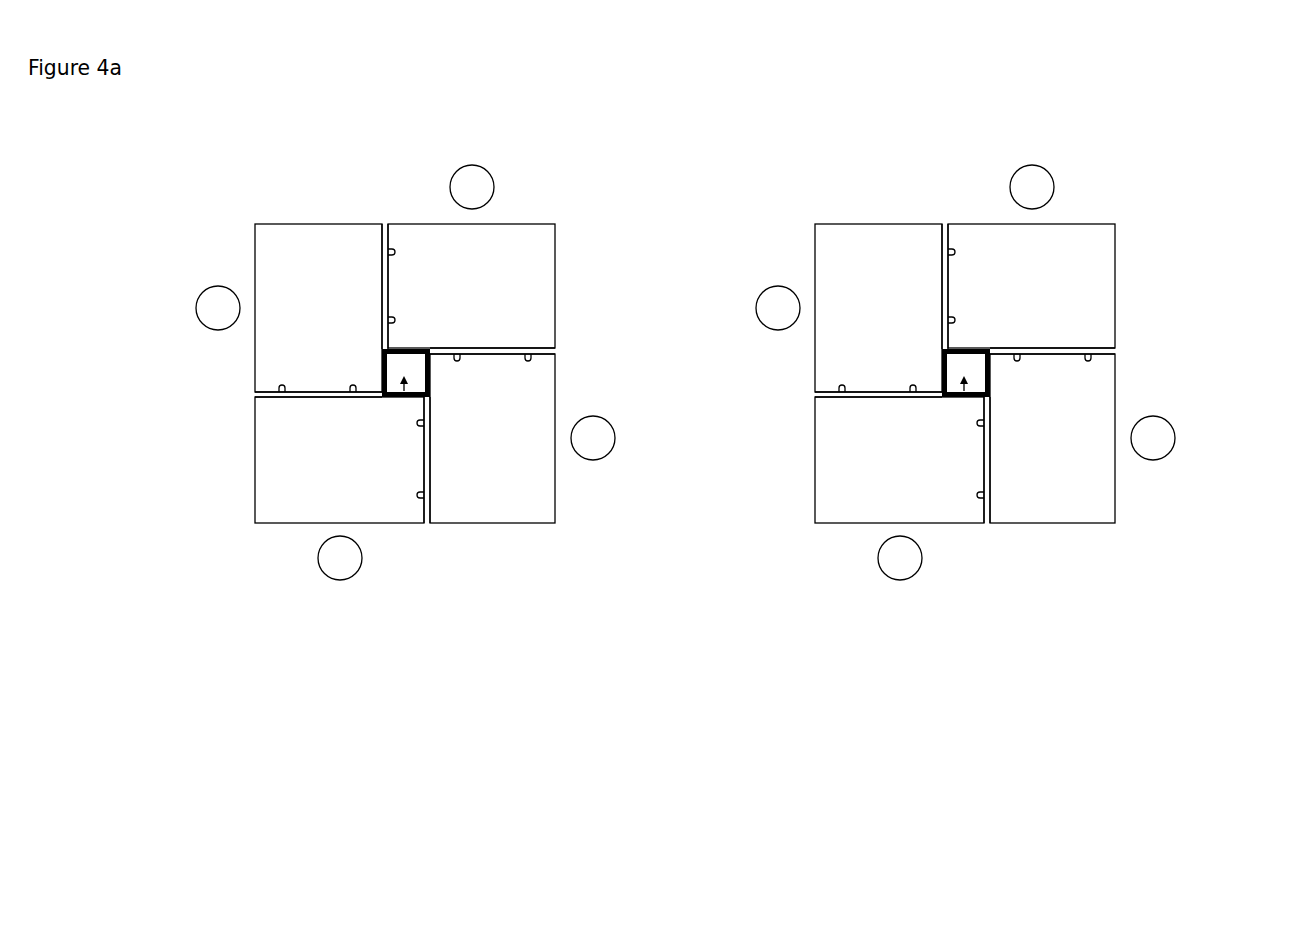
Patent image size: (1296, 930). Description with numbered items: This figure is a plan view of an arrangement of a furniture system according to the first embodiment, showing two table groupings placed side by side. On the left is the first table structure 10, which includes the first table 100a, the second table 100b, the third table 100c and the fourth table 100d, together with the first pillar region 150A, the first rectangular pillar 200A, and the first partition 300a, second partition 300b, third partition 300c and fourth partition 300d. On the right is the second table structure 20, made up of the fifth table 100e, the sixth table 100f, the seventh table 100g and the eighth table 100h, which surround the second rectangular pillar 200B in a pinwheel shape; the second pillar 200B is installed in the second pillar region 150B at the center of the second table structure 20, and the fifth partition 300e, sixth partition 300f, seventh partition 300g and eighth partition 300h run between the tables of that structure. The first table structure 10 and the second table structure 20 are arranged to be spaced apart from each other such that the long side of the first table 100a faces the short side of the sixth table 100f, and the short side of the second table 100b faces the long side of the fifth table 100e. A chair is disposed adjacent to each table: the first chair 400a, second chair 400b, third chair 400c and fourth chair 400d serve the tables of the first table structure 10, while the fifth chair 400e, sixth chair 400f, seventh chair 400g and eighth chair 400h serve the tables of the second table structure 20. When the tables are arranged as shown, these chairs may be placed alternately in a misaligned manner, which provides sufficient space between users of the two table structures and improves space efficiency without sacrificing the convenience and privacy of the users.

The first table structure 10 is at (278, 204).
The second table structure 20 is at (966, 368).
The first table 100a is at (263, 485).
The second table 100b is at (277, 262).
The third table 100c is at (535, 238).
The fourth table 100d is at (507, 515).
The fifth table 100e is at (844, 460).
The sixth table 100f is at (812, 298).
The seventh table 100g is at (1053, 255).
The eighth table 100h is at (1052, 466).
The first pillar region 150A is at (405, 398).
The second pillar region 150B is at (939, 426).
The first rectangular pillar 200A is at (419, 343).
The second rectangular pillar 200B is at (1005, 349).
The first partition 300a is at (277, 398).
The second partition 300b is at (380, 243).
The third partition 300c is at (542, 355).
The fourth partition 300d is at (424, 512).
The fifth partition 300e is at (847, 425).
The sixth partition 300f is at (923, 258).
The seventh partition 300g is at (1098, 371).
The eighth partition 300h is at (971, 488).
The first chair 400a is at (342, 572).
The second chair 400b is at (207, 305).
The third chair 400c is at (470, 178).
The fourth chair 400d is at (600, 440).
The fifth chair 400e is at (903, 586).
The sixth chair 400f is at (731, 305).
The seventh chair 400g is at (1035, 155).
The eighth chair 400h is at (1200, 438).